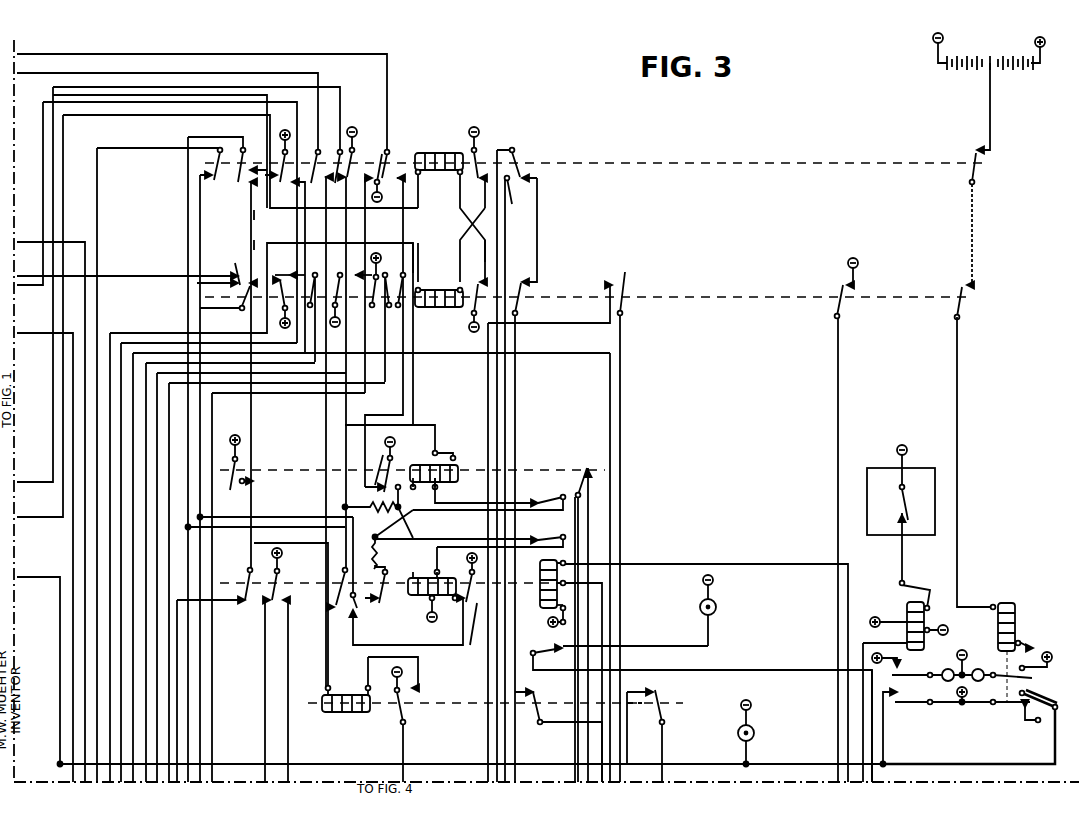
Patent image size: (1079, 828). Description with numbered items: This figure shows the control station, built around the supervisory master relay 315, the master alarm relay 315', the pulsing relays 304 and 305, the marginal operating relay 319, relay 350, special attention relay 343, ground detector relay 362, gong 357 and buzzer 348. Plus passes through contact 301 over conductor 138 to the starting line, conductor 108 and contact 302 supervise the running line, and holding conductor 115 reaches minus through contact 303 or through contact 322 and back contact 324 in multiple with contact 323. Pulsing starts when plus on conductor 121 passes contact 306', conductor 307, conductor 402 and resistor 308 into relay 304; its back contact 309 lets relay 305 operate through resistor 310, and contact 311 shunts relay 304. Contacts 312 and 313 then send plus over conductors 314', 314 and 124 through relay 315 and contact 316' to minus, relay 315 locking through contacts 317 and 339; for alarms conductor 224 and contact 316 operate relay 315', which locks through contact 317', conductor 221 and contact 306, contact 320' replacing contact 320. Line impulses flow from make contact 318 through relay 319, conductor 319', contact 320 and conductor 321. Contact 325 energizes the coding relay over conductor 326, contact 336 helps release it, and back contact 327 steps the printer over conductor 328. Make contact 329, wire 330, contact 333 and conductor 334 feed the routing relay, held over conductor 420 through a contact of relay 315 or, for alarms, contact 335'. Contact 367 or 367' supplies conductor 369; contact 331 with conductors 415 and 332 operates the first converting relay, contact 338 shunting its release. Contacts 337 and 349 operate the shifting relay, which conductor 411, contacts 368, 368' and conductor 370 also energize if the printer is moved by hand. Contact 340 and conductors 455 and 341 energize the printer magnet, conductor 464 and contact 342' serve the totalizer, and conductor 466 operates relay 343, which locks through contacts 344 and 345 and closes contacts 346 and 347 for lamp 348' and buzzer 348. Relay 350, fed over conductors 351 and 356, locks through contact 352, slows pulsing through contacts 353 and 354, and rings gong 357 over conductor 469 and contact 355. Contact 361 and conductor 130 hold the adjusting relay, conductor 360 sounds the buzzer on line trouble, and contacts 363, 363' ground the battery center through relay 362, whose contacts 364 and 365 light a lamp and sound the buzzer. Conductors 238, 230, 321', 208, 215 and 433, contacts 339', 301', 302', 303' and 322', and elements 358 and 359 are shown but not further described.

The holding conductor 115 is at (56, 54).
The conductor 321 is at (168, 105).
The conductor 124 is at (53, 92).
The conductor 130 is at (157, 222).
The conductor 138 is at (158, 120).
The conductor 108 is at (35, 471).
The conductor 314 is at (50, 499).
The conductor 121 is at (127, 271).
The conductor 361 is at (450, 444).
The conductor 360 is at (50, 785).
The conductor 402 is at (195, 185).
The conductor 224 is at (52, 612).
The conductor 238 is at (156, 332).
The conductor 230 is at (133, 640).
The conductor 321' is at (230, 572).
The conductor 208 is at (344, 365).
The conductor 215 is at (168, 695).
The conductor 314' is at (218, 691).
The conductor 221 is at (146, 146).
The conductor 307 is at (204, 230).
The conductor 319' is at (307, 479).
The contact of relay 315 306 is at (218, 179).
The contact of relay 315 317 is at (254, 344).
The contact of relay 315 339 is at (236, 211).
The contact of relay 315' 317' is at (238, 244).
The contact of relay 315' 306' is at (221, 269).
The contact 339' is at (228, 306).
The contact of relay 315 301 is at (284, 169).
The contact of relay 315 367 is at (289, 266).
The contact of relay 315' 367' is at (290, 252).
The switch 301' is at (290, 290).
The contact 320 is at (319, 421).
The contact of relay 315' 320' is at (321, 307).
The contact 302 is at (351, 362).
The switch 302' is at (351, 289).
The contact of relay 315' 335' is at (402, 302).
The contact of relay 315 303 is at (386, 181).
The switch 303' is at (416, 327).
The contact of relay 315 322 is at (403, 156).
The switch 322' is at (388, 263).
The supervisory master relay 315 is at (450, 201).
The master alarm relay 315' is at (439, 286).
The contact 316 is at (493, 167).
The contact 316' is at (477, 286).
The conductor 411 is at (510, 146).
The contact 368 is at (542, 207).
The contact 368' is at (545, 531).
The contact of relay 315 337 is at (522, 191).
The conductor 433 is at (506, 224).
The conductor 328 is at (583, 330).
The switch 358 is at (616, 285).
The conductor 369 is at (589, 360).
The conductor 359 is at (618, 738).
The contact of relay 305 312 is at (236, 489).
The contact of relay 304 313 is at (246, 602).
The make contact of relay 304 329 is at (282, 590).
The contact of relay 304 333 is at (284, 618).
The contact of relay 304 338 is at (328, 565).
The pulsing relay 305 is at (459, 463).
The contact of relay 305 311 is at (397, 464).
The contact of relay 305 323 is at (377, 465).
The resistor 308 is at (378, 512).
The resistor 310 is at (394, 555).
The contact of relay 350 354 is at (534, 496).
The contact of relay 350 353 is at (536, 540).
The contact of relay 305 340 is at (586, 462).
The main pulsing relay 304 is at (422, 597).
The back contact of relay 304 324 is at (378, 605).
The contact of relay 304 336 is at (407, 583).
The back contact of relay 304 309 is at (340, 603).
The make contact of relay 304 318 is at (460, 612).
The back contact of relay 304 327 is at (466, 637).
The marginal operating relay 319 is at (370, 684).
The make contact of relay 319 325 is at (398, 700).
The conductor 326 is at (400, 742).
The relay 350 is at (542, 562).
The contact of relay 350 352 is at (541, 614).
The contact of relay 350 355 is at (565, 651).
The contact of relay 319 349 is at (540, 690).
The conductor 351 is at (602, 720).
The conductor 341 is at (587, 752).
The contact of relay 319 331 is at (657, 691).
The gong 357 is at (716, 604).
The buzzer 348 is at (743, 733).
The contact 363 is at (989, 108).
The contact 363' is at (944, 251).
The contact of relay 315' 342' is at (870, 520).
The contact of relay 305 345 is at (901, 514).
The contact of relay 343 344 is at (945, 578).
The special attention relay 343 is at (904, 608).
The ground detector relay 362 is at (1014, 614).
The contact of relay 343 346 is at (907, 662).
The light 348' is at (962, 656).
The contact of relay 343 347 is at (898, 689).
The contact of relay 362 364 is at (1044, 663).
The make contact of relay 362 365 is at (978, 718).
The conductor 466 is at (863, 720).
The conductor 356 is at (848, 748).
The conductor 464 is at (843, 780).
The conductor 469 is at (873, 780).
The conductor 420 is at (212, 770).
The conductor 334 is at (265, 770).
The wire 330 is at (290, 770).
The conductor 370 is at (515, 770).
The conductor 455 is at (578, 770).
The conductor 415 is at (628, 770).
The conductor 332 is at (664, 770).